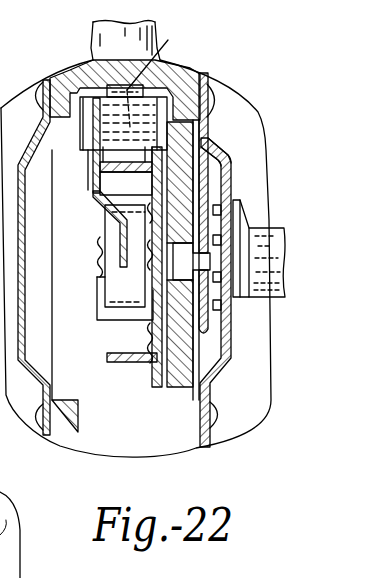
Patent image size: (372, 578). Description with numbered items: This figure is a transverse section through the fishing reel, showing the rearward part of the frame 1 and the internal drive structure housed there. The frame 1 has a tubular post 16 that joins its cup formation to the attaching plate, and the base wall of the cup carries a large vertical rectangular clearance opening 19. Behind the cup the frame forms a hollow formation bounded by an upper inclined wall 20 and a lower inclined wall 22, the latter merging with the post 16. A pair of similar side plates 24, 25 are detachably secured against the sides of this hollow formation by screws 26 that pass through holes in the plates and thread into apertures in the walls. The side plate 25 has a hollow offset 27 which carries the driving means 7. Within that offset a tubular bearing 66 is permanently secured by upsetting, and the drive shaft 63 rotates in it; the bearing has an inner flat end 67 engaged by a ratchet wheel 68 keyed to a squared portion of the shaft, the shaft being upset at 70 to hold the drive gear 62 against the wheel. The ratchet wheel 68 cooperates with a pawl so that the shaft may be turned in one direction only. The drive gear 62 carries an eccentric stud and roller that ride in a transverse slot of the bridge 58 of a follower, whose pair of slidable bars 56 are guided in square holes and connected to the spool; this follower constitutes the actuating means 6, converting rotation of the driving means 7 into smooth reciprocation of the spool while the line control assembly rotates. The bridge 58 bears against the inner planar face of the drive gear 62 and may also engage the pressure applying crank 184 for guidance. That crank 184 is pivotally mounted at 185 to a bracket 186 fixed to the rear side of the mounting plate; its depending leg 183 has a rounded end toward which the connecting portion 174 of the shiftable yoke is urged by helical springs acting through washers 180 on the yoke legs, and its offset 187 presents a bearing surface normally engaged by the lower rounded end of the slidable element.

The frame 1 is at (77, 55).
The actuating means 6 is at (132, 368).
The driving means 7 is at (258, 147).
The tubular post 16 is at (158, 35).
The clearance opening 19 is at (52, 322).
The upper inclined wall 20 is at (67, 72).
The lower inclined wall 22 is at (193, 448).
The side plate 24 is at (43, 389).
The side plate 25 is at (211, 390).
The screws 26 is at (33, 106).
The hollow offset 27 is at (215, 147).
The slidable bars 56 is at (108, 375).
The bridge 58 is at (153, 342).
The drive gear 62 is at (175, 380).
The drive shaft 63 is at (177, 253).
The tubular bearing 66 is at (281, 228).
The inner flat end 67 is at (213, 280).
The ratchet wheel 68 is at (206, 333).
The upset 70 is at (148, 260).
The connecting portion 174 is at (110, 287).
The washers 180 is at (98, 212).
The depending leg 183 is at (100, 263).
The pressure applying crank 184 is at (95, 178).
The pivot 185 is at (170, 76).
The bracket 186 is at (90, 157).
The offset 187 is at (161, 82).